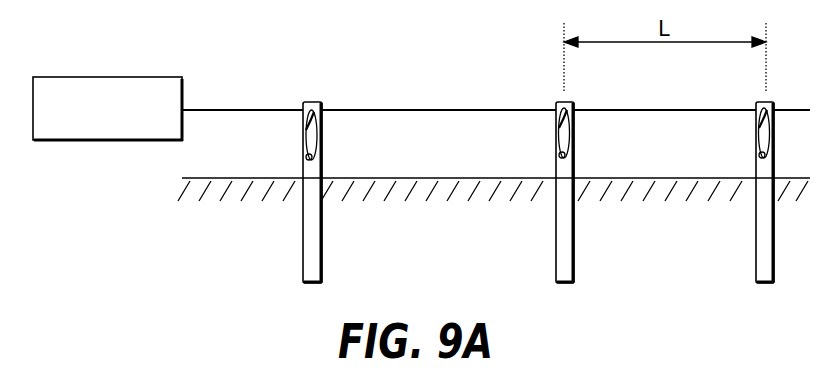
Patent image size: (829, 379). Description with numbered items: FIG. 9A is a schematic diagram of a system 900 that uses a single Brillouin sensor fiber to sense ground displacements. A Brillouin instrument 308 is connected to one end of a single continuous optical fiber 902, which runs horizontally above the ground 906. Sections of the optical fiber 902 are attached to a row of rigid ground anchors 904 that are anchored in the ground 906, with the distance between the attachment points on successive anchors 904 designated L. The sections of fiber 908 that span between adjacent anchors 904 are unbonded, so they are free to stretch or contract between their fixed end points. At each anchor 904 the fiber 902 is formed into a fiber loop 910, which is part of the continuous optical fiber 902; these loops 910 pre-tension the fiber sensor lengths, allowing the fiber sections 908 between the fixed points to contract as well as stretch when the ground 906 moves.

The Brillouin instrument 308 is at (49, 141).
The system using a single Brillouin sensor fiber 900 is at (86, 240).
The optical fiber 902 is at (241, 109).
The rigid ground anchors 904 is at (302, 266).
The ground 906 is at (472, 177).
The sections of fiber 908 is at (440, 109).
The fiber loops 910 is at (313, 160).